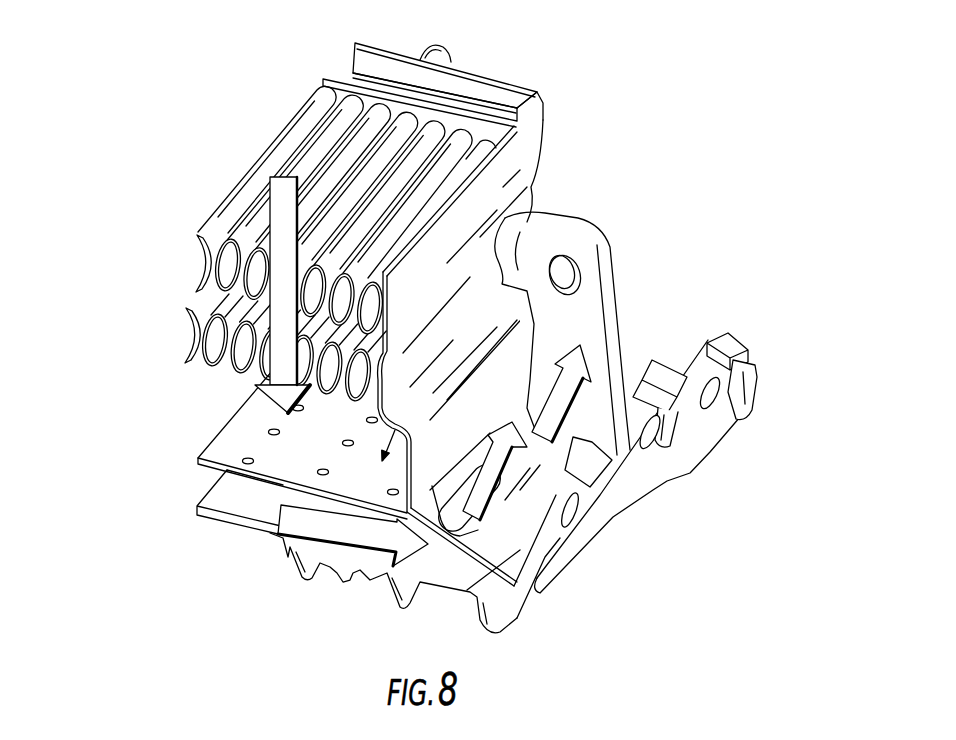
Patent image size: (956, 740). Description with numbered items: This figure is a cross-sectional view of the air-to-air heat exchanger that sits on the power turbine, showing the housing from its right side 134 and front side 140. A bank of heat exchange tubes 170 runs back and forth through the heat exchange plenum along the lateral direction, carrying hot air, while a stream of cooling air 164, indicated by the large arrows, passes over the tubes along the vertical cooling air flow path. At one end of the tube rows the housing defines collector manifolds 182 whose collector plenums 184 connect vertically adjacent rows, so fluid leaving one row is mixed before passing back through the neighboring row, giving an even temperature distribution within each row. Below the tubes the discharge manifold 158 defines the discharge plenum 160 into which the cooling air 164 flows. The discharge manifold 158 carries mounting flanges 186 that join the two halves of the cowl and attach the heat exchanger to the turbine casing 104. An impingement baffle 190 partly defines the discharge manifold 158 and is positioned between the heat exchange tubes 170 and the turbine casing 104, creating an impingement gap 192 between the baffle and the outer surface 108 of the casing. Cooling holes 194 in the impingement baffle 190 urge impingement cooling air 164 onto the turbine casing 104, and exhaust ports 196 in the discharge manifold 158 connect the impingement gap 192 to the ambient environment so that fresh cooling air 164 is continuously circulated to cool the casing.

The turbine casing 104 is at (263, 535).
The outer surface 108 is at (232, 507).
The right side 134 is at (487, 88).
The front side 140 is at (497, 185).
The discharge manifold 158 is at (512, 365).
The discharge plenum 160 is at (497, 278).
The cooling air 164 is at (281, 197).
The heat exchange tubes 170 is at (197, 332).
The collector manifolds 182 is at (545, 94).
The collector plenums 184 is at (489, 94).
The mounting flanges 186 is at (670, 363).
The impingement baffle 190 is at (226, 440).
The impingement gap 192 is at (262, 497).
The cooling holes 194 is at (212, 458).
The exhaust ports 196 is at (473, 528).